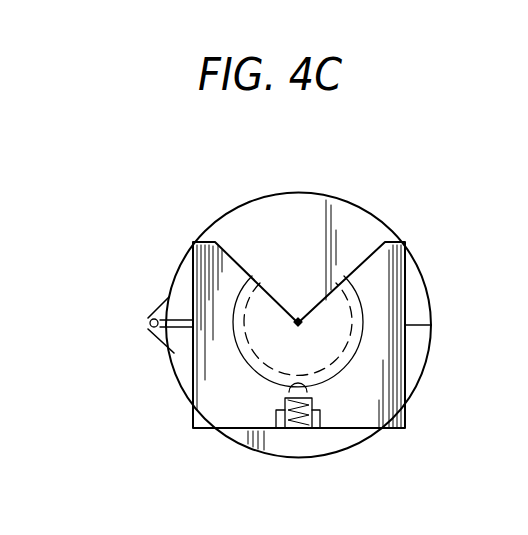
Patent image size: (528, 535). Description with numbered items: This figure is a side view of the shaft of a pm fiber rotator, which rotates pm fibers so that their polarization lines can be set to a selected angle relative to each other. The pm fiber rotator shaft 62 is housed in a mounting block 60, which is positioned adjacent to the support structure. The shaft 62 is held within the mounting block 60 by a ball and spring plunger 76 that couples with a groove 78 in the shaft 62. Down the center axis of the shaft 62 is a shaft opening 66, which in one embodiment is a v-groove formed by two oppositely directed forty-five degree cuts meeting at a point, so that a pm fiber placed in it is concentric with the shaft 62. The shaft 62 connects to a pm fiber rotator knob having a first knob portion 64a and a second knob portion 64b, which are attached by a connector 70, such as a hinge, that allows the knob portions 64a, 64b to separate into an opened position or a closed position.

The mounting block 60 is at (387, 430).
The pm fiber rotator shaft 62 is at (255, 362).
The first knob portion 64a is at (330, 195).
The second knob portion 64b is at (423, 370).
The shaft opening 66 is at (299, 318).
The connector 70 is at (150, 322).
The ball and spring plunger 76 is at (293, 425).
The groove 78 is at (358, 303).